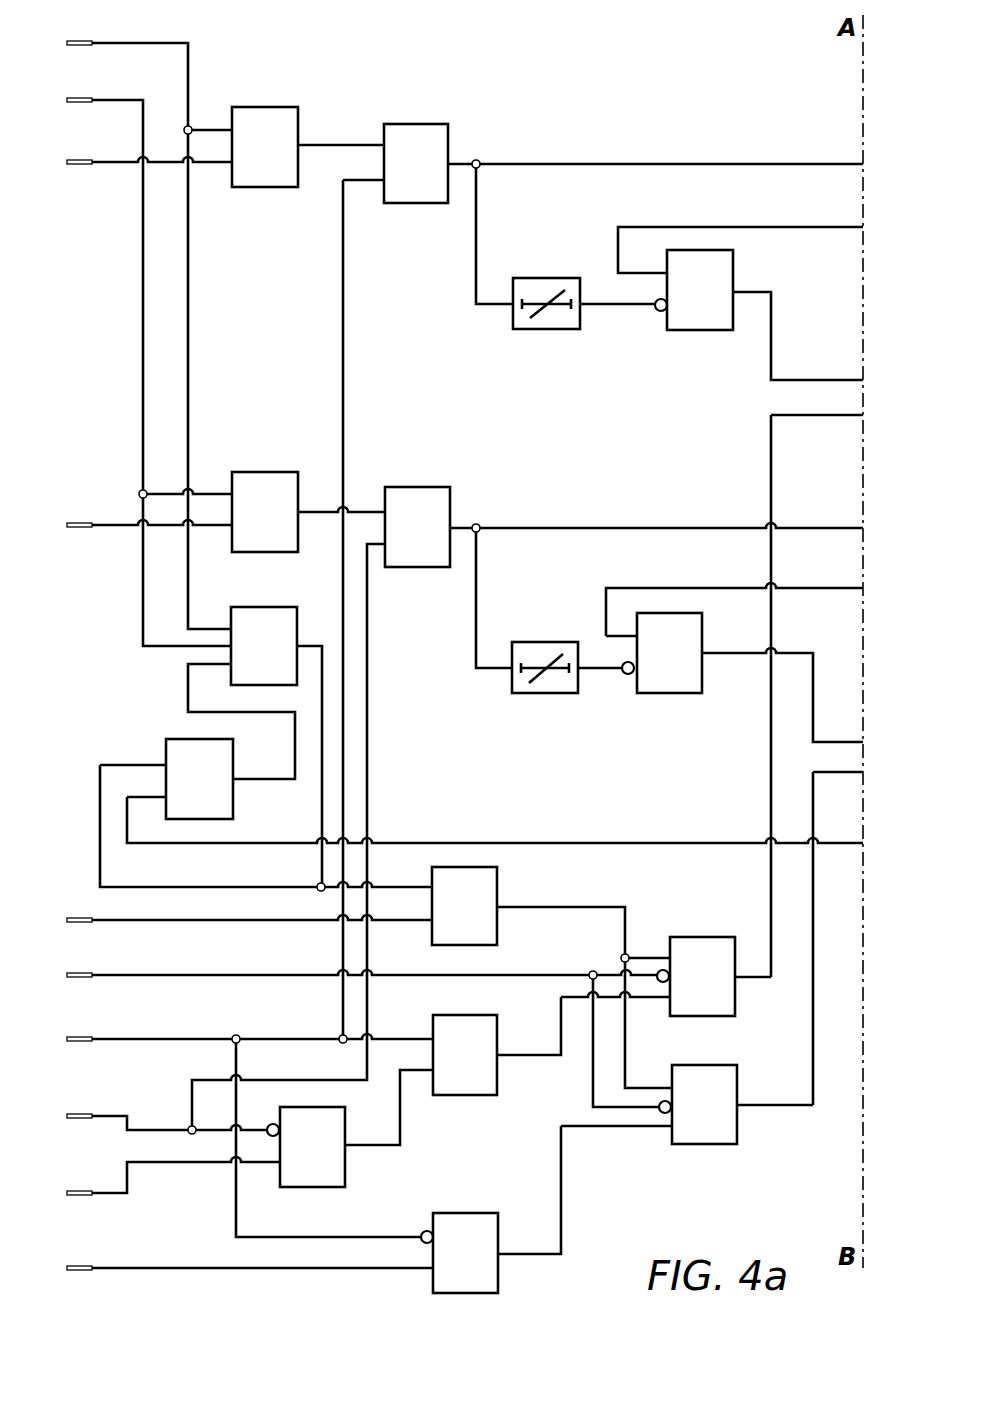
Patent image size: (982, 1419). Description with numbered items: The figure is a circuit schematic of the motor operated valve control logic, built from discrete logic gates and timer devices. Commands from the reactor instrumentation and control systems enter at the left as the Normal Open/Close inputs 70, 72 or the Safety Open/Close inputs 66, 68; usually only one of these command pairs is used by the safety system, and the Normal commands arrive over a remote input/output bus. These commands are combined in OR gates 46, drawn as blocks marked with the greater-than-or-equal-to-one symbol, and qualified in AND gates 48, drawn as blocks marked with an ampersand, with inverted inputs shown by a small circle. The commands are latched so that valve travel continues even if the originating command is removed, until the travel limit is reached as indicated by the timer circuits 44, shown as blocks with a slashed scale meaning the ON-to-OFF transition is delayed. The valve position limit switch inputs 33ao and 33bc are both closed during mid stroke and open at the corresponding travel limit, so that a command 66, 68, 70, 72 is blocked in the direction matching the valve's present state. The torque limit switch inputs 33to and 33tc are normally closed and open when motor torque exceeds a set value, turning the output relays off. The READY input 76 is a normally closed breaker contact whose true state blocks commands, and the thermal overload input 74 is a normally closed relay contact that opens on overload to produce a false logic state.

The timer circuit 44 is at (545, 278).
The OR gate 46 is at (298, 123).
The AND gate 48 is at (448, 143).
The safety open command input 66 is at (78, 38).
The safety close command input 68 is at (78, 97).
The normal open command input 70 is at (78, 159).
The normal close command input 72 is at (78, 521).
The thermal overload input 74 is at (78, 915).
The READY input 76 is at (78, 971).
The valve position limit switch input 33ao is at (95, 1026).
The valve position limit switch input 33bc is at (94, 1102).
The torque limit switch input 33to is at (92, 1178).
The torque limit switch input 33tc is at (92, 1256).